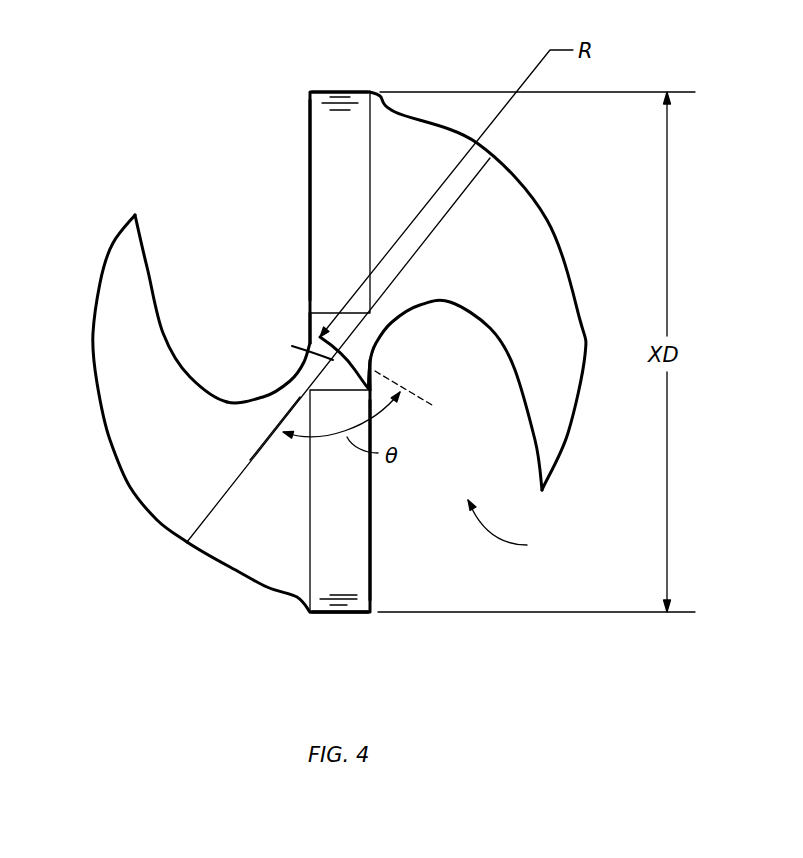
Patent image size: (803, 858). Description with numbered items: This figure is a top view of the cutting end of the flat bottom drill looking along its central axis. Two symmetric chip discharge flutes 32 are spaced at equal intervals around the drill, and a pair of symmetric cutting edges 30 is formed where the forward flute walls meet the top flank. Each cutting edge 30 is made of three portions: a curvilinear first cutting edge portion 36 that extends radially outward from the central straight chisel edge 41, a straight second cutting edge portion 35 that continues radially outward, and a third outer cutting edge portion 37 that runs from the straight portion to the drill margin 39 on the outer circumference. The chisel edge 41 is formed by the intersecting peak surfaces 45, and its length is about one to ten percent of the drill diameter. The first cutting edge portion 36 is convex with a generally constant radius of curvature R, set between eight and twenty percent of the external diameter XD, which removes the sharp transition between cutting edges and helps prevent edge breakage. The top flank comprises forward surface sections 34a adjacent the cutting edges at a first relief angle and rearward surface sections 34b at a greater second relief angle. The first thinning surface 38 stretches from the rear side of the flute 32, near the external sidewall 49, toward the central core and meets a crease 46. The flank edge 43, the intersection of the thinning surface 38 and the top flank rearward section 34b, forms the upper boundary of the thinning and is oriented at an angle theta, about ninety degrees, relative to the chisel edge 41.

The cutting edge 30 is at (228, 220).
The third outer cutting edge portion 37 is at (310, 100).
The second cutting edge portion 35 is at (310, 232).
The first cutting edge portion 36 is at (313, 340).
The margin 39 is at (348, 613).
The first thinning surface 38 is at (520, 257).
The top flank forward surface section 34a is at (323, 572).
The top flank rearward surface section 34b is at (267, 547).
The sidewall 49 is at (480, 142).
The flank edge 43 is at (240, 477).
The chisel edge 41 is at (330, 358).
The peak surface 45 is at (333, 380).
The crease 46 is at (375, 335).
The chip discharge flute 32 is at (527, 545).